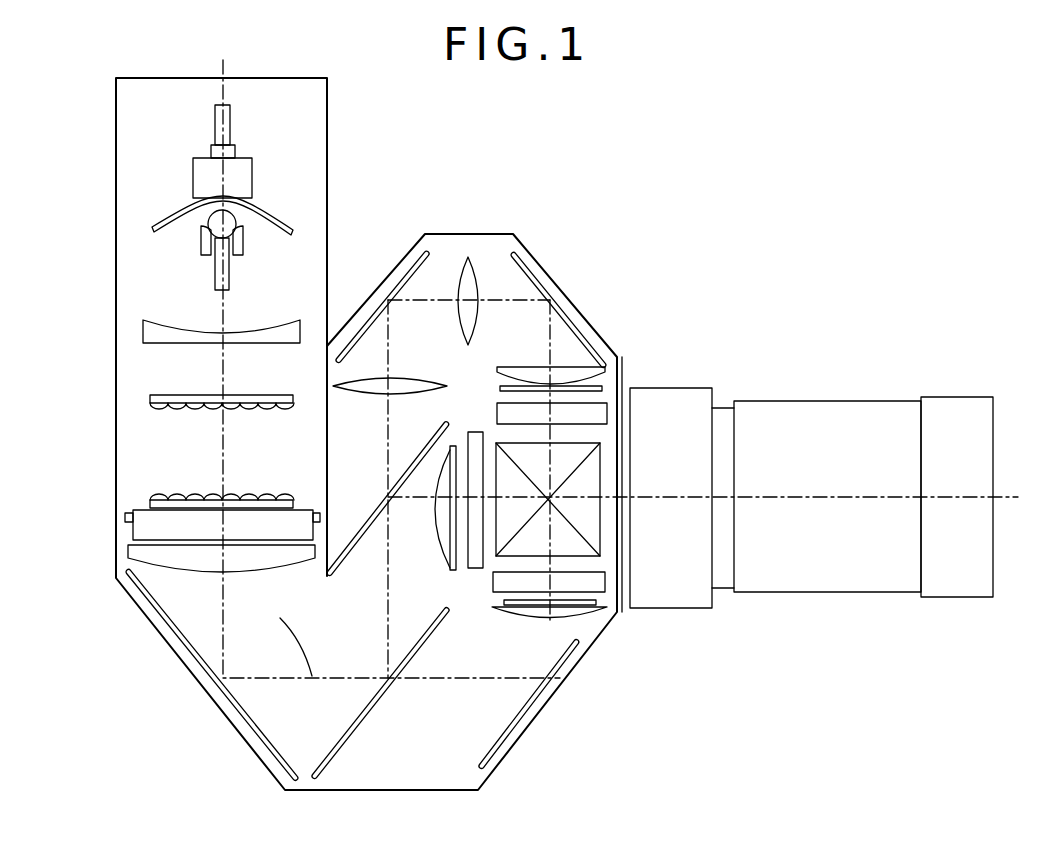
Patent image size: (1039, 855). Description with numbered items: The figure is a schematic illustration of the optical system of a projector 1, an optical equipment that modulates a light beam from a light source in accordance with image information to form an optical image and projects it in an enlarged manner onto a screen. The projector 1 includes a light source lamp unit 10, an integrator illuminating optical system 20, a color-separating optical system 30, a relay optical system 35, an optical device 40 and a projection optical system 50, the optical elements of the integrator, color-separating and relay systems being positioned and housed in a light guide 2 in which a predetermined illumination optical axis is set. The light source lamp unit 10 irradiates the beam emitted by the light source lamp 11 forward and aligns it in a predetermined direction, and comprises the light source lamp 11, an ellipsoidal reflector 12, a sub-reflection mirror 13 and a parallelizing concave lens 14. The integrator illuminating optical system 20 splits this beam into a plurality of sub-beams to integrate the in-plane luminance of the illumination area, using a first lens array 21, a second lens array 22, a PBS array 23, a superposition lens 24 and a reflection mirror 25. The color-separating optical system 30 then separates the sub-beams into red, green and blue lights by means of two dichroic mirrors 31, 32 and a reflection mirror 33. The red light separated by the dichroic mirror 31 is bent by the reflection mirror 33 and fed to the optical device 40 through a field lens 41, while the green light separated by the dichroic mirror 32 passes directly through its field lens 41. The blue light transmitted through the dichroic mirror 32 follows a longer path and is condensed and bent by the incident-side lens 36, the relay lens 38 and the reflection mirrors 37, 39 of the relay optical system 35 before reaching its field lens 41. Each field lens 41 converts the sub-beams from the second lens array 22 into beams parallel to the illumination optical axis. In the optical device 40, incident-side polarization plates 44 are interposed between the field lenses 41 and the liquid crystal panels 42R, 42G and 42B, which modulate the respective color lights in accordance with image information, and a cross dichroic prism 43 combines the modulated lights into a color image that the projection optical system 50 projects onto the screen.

The projector 1 is at (815, 217).
The light guide 2 is at (572, 292).
The light source lamp unit 10 is at (150, 177).
The light source lamp 11 is at (205, 224).
The ellipsoidal reflector 12 is at (152, 226).
The sub-reflection mirror 13 is at (203, 250).
The parallelizing concave lens 14 is at (143, 327).
The integrator illuminating optical system 20 is at (172, 452).
The first lens array 21 is at (154, 398).
The second lens array 22 is at (152, 497).
The PBS array 23 is at (131, 523).
The superposition lens 24 is at (131, 546).
The reflection mirror 25 is at (197, 670).
The color-separating optical system 30 is at (421, 742).
The dichroic mirror 31 is at (348, 742).
The dichroic mirror 32 is at (346, 554).
The reflection mirror 33 is at (528, 720).
The relay optical system 35 is at (492, 262).
The incident-side lens 36 is at (378, 380).
The reflection mirror 37 is at (416, 256).
The relay lens 38 is at (467, 256).
The reflection mirror 39 is at (535, 262).
The optical device 40 is at (612, 605).
The field lens 41 is at (534, 376).
The liquid crystal panel 42G is at (480, 432).
The liquid crystal panel 42B is at (604, 403).
The liquid crystal panel 42R is at (606, 580).
The cross dichroic prism 43 is at (604, 462).
The incident-side polarization plate 44 is at (601, 387).
The projection optical system 50 is at (847, 365).